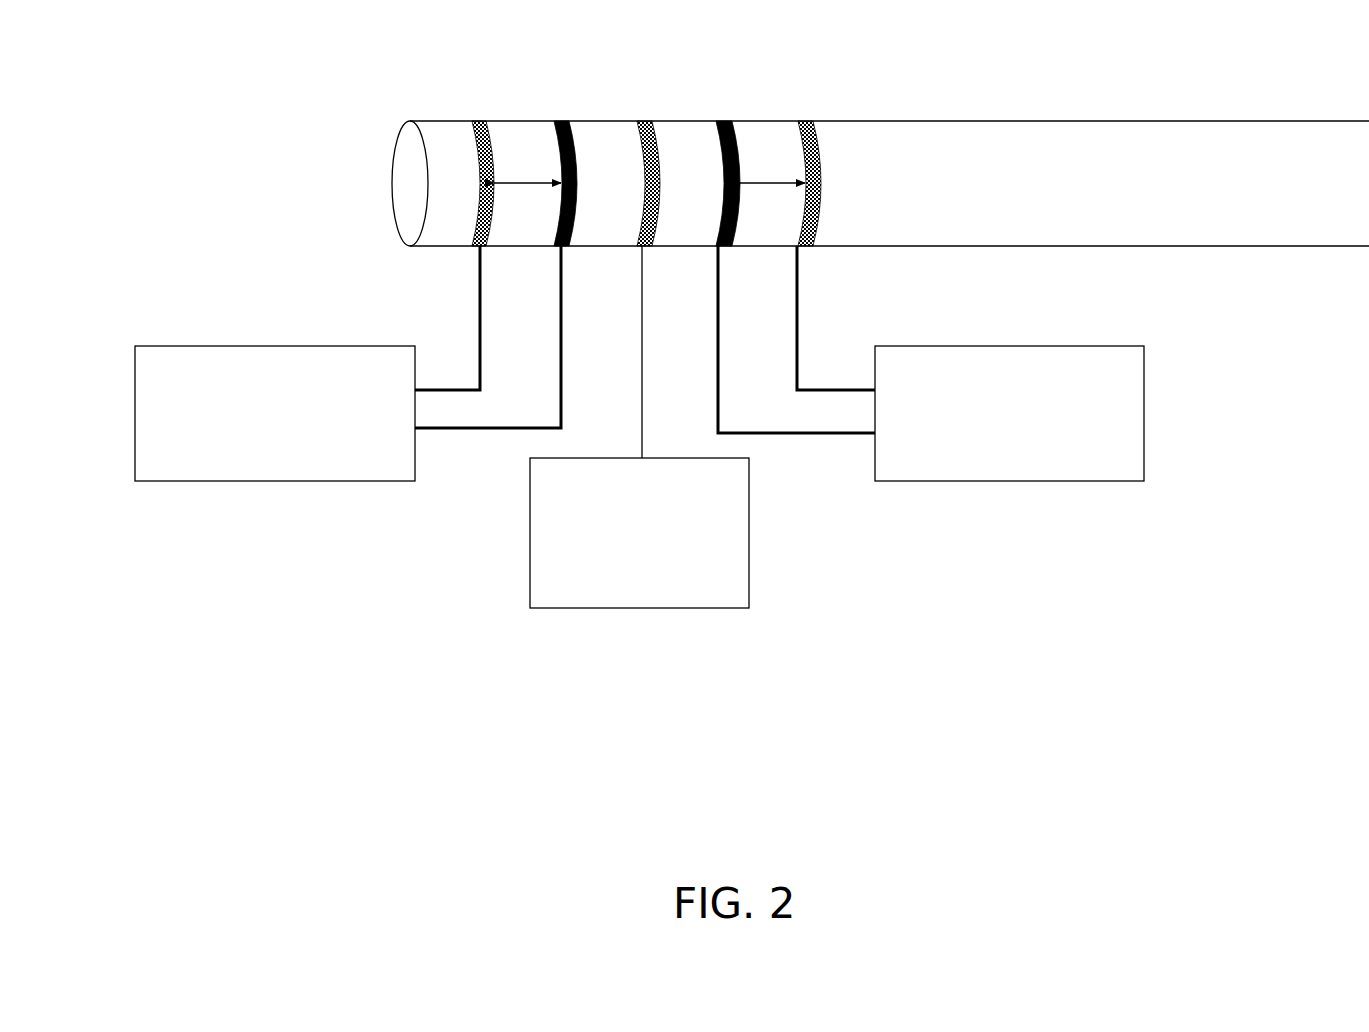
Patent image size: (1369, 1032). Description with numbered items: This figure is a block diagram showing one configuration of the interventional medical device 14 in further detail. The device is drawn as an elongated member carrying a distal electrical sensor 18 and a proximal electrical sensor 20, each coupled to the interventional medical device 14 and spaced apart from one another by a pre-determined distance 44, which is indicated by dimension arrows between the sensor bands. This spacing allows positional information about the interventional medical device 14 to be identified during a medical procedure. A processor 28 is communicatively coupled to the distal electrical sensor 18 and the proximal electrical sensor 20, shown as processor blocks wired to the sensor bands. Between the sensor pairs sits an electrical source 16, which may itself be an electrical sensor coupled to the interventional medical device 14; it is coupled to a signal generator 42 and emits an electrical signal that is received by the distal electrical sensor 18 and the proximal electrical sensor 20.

The interventional medical device 14 is at (1066, 122).
The electrical source 16 is at (643, 121).
The distal electrical sensor 18 is at (561, 121).
The proximal electrical sensor 20 is at (726, 121).
The processor 28 is at (238, 481).
The signal generator 42 is at (645, 608).
The pre-determined distance 44 is at (525, 183).